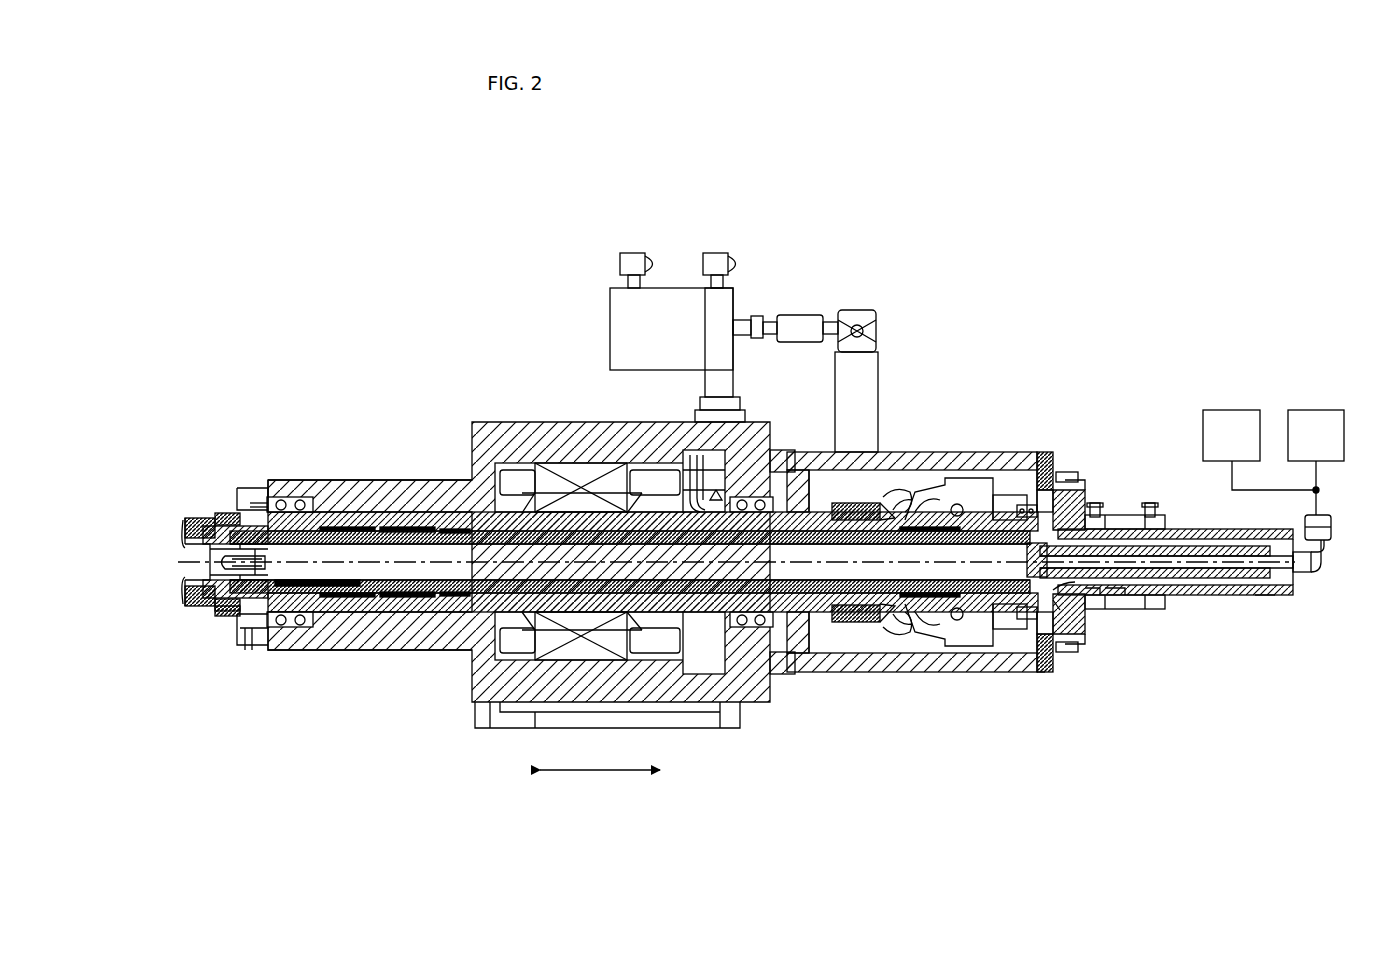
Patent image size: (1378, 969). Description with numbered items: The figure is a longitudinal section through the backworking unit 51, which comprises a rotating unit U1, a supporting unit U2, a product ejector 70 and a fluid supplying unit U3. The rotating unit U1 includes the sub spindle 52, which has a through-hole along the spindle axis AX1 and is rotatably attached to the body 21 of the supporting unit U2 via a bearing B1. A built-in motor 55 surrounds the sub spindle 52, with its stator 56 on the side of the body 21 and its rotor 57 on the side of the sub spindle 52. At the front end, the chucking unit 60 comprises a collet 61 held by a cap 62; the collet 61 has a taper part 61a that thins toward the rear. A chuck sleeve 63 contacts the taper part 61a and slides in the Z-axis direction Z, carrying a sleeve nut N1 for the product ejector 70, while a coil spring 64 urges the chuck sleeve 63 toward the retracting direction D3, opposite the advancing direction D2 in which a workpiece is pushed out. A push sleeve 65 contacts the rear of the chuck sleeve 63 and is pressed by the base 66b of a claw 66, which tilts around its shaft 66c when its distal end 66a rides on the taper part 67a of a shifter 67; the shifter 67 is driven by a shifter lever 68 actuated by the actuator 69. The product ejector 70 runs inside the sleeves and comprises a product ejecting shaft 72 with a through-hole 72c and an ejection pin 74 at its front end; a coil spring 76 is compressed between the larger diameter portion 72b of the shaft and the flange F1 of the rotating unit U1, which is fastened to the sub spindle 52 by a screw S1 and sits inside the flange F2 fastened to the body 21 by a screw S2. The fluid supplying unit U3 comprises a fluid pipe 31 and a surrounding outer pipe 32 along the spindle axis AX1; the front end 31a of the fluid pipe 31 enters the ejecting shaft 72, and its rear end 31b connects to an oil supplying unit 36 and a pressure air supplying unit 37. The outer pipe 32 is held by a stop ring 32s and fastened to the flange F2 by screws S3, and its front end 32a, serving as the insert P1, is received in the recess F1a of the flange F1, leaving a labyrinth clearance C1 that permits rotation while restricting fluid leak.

The supporting unit body 21 is at (1032, 450).
The fluid pipe 31 is at (1212, 580).
The front end of the fluid pipe 31a is at (998, 612).
The rear end of the fluid pipe 31b is at (1318, 573).
The outer pipe 32 is at (1240, 596).
The front end of the outer pipe 32a is at (1030, 590).
The stop ring 32s is at (1166, 522).
The oil supplying unit 36 is at (1259, 450).
The pressure air supplying unit 37 is at (1316, 462).
The backworking unit 51 is at (473, 726).
The sub spindle 52 is at (405, 612).
The built-in motor 55 is at (590, 479).
The stator 56 is at (590, 470).
The rotor 57 is at (560, 498).
The chucking unit 60 is at (218, 615).
The collet 61 is at (185, 520).
The taper part 61a is at (215, 518).
The cap 62 is at (195, 606).
The chuck sleeve 63 is at (313, 485).
The coil spring for opening the collet 64 is at (310, 593).
The push sleeve 65 is at (819, 445).
The claw 66 is at (958, 640).
The distal end of the claw 66a is at (900, 497).
The base of the claw 66b is at (937, 505).
The shaft of the claw 66c is at (962, 503).
The shifter 67 is at (880, 623).
The taper part of the shifter 67a is at (908, 498).
The shifter lever 68 is at (880, 412).
The actuator 69 is at (680, 288).
The product ejector 70 is at (826, 608).
The product ejecting shaft 72 is at (630, 645).
The larger diameter portion 72b is at (432, 533).
The through-hole 72c is at (943, 610).
The ejection pin 74 is at (186, 572).
The coil spring for ejecting a product 76 is at (455, 540).
The spindle axis AX1 is at (375, 612).
The bearing B1 is at (285, 498).
The labyrinth clearance C1 is at (1075, 590).
The advancing direction D2 is at (518, 771).
The retracting direction D3 is at (683, 771).
The flange of the rotating unit F1 is at (1008, 504).
The recess F1a is at (1098, 592).
The flange of the supporting unit F2 is at (1120, 598).
The sleeve nut N1 is at (360, 535).
The insert P1 is at (1022, 672).
The screw S1 is at (1078, 503).
The screw S2 is at (1070, 480).
The screws S3 is at (1150, 502).
The rotating unit U1 is at (1062, 608).
The supporting unit U2 is at (1047, 676).
The fluid supplying unit U3 is at (1267, 600).
The Z-axis direction Z is at (600, 789).